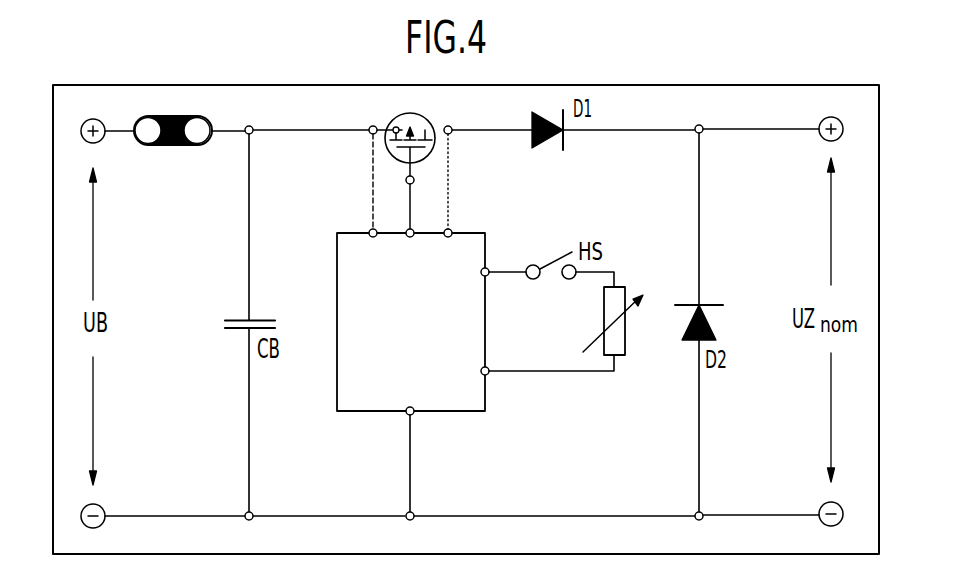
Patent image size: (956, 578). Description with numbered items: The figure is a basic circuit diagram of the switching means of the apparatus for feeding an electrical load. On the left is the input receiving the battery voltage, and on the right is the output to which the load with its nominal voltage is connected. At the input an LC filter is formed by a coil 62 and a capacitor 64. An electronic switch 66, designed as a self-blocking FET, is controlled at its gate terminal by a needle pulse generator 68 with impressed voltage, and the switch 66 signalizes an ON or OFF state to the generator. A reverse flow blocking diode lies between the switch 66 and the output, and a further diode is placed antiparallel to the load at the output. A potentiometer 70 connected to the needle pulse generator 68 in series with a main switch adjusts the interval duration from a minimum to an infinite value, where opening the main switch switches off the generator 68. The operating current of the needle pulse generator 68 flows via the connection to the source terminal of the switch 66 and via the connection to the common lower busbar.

The coil 62 is at (237, 113).
The capacitor 64 is at (254, 327).
The electronic switch 66 is at (412, 159).
The needle pulse generator 68 is at (413, 322).
The potentiometer 70 is at (610, 321).